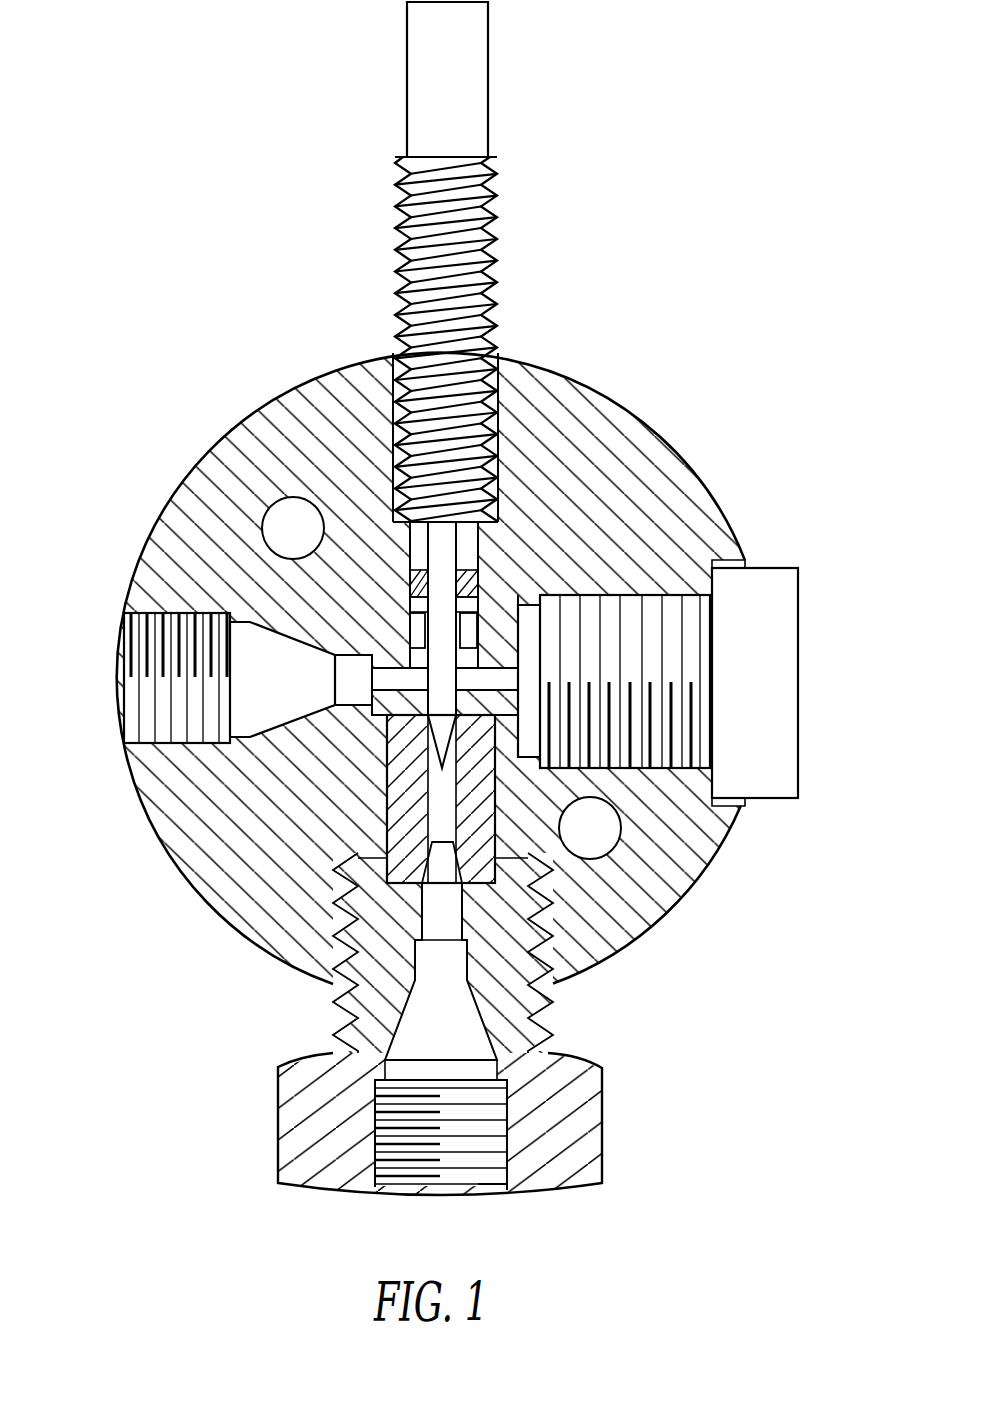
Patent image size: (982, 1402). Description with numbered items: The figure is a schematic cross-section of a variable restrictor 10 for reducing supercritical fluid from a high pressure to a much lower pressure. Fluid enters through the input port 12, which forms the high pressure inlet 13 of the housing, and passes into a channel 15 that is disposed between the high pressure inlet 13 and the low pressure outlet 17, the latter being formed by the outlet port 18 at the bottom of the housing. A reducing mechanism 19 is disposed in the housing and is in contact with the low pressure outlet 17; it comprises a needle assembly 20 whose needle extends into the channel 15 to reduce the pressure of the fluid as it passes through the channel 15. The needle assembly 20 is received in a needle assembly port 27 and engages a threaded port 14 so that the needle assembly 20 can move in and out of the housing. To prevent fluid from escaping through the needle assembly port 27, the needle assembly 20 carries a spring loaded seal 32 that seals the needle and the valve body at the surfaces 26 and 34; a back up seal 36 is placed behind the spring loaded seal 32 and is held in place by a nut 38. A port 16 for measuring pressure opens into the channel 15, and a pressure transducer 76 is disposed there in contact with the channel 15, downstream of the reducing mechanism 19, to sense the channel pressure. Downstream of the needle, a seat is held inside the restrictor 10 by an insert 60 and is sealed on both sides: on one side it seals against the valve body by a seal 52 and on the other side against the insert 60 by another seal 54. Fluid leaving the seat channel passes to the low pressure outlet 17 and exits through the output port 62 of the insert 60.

The variable restrictor 10 is at (700, 476).
The input port 12 is at (155, 747).
The high pressure inlet 13 is at (130, 693).
The threaded port 14 is at (492, 422).
The channel 15 is at (372, 708).
The port for measuring pressure 16 is at (612, 590).
The low pressure outlet 17 is at (440, 1182).
The outlet port 18 is at (538, 975).
The reducing mechanism 19 is at (443, 552).
The needle assembly 20 is at (488, 80).
The sealing surface 26 is at (428, 617).
The needle assembly port 27 is at (502, 357).
The spring loaded seal 32 is at (410, 600).
The sealing surface 34 is at (410, 630).
The back up seal 36 is at (410, 575).
The nut 38 is at (397, 513).
The seal 52 is at (395, 758).
The seal 54 is at (345, 912).
The insert 60 is at (605, 1130).
The output port 62 is at (492, 1182).
The pressure transducer 76 is at (768, 648).